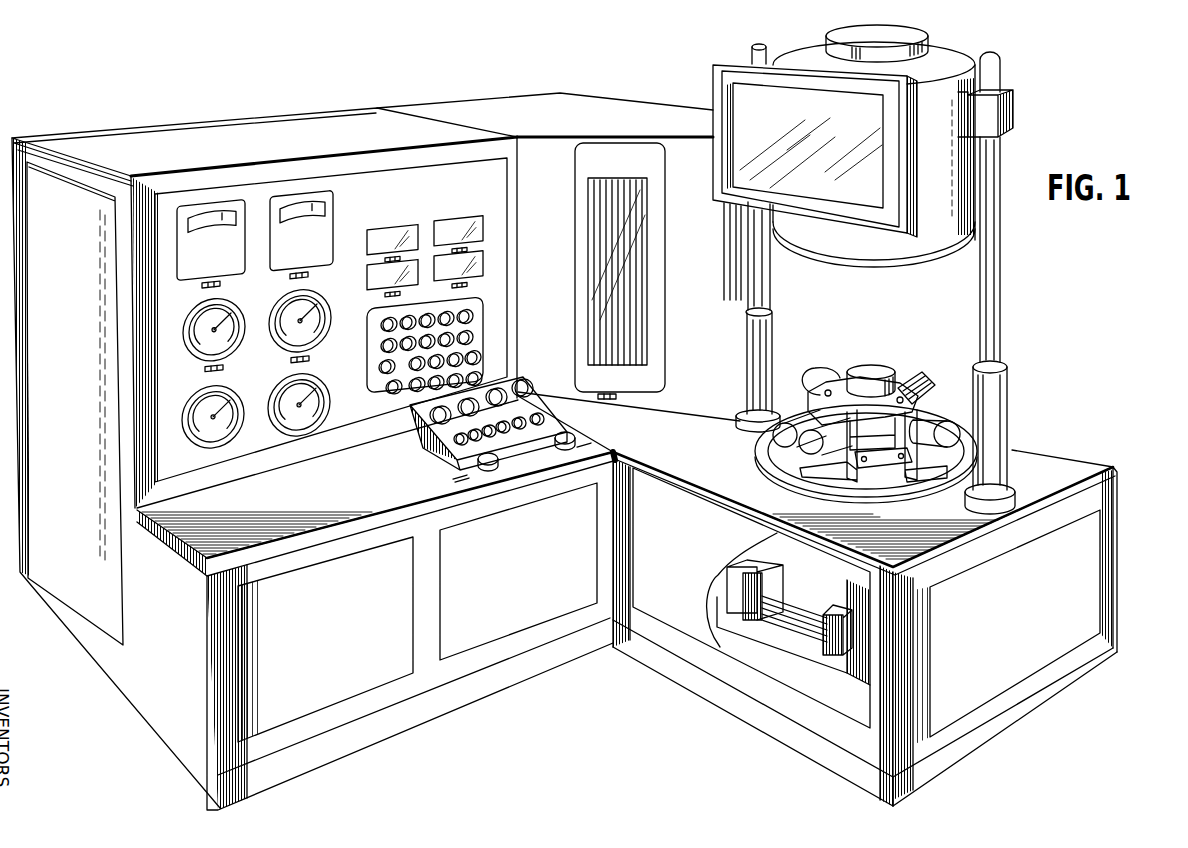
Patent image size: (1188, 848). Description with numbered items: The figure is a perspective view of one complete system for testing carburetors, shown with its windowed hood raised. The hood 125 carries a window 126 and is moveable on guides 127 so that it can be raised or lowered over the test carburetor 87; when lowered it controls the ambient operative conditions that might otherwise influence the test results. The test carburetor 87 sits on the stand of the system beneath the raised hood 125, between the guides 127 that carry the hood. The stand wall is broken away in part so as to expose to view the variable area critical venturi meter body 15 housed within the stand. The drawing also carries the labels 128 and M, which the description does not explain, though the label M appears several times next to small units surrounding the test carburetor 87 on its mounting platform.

The hood 125 is at (947, 50).
The window 126 is at (750, 93).
The guides 127 is at (1001, 156).
The console cabinet 128 is at (1109, 538).
The test carburetor 87 is at (874, 367).
The motors M is at (927, 378).
The variable area critical venturi meter body 15 is at (814, 634).